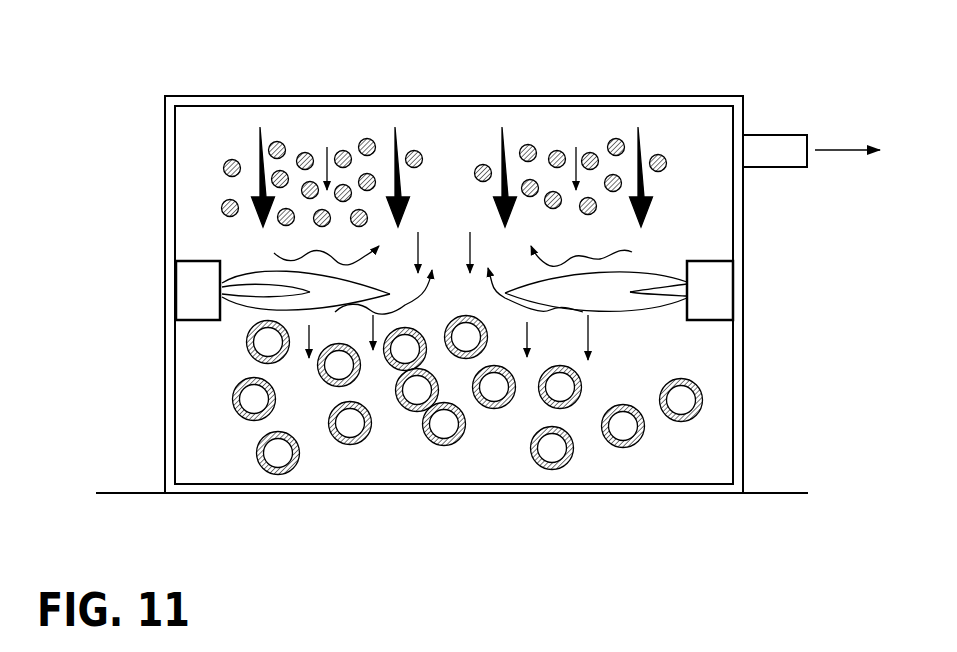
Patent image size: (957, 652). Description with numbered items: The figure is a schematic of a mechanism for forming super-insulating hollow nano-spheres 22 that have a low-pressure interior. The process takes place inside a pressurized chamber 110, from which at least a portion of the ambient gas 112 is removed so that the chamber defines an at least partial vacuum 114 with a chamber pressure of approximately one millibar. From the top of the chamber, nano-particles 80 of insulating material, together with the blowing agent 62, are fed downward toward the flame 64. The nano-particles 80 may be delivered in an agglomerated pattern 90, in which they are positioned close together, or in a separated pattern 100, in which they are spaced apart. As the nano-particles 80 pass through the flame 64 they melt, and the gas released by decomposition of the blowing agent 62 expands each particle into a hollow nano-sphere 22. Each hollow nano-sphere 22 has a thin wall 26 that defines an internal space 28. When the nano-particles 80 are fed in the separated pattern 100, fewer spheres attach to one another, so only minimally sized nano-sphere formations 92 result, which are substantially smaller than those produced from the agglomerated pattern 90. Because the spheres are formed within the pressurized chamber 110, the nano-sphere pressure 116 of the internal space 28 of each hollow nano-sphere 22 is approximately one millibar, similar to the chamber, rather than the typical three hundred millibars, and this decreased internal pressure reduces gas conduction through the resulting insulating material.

The pressurized chamber 110 is at (238, 87).
The blowing agent 62 is at (258, 133).
The nano-particles 80 is at (299, 158).
The agglomerated pattern 90 is at (351, 140).
The separated pattern 100 is at (591, 131).
The ambient gas 112 is at (835, 150).
The at least partial vacuum 114 is at (213, 172).
The flame 64 is at (229, 315).
The hollow nano-spheres 22 is at (251, 454).
The nano-sphere formations 92 is at (413, 422).
The nano-sphere pressure 116 is at (442, 421).
The wall 26 is at (547, 469).
The internal space 28 is at (621, 424).